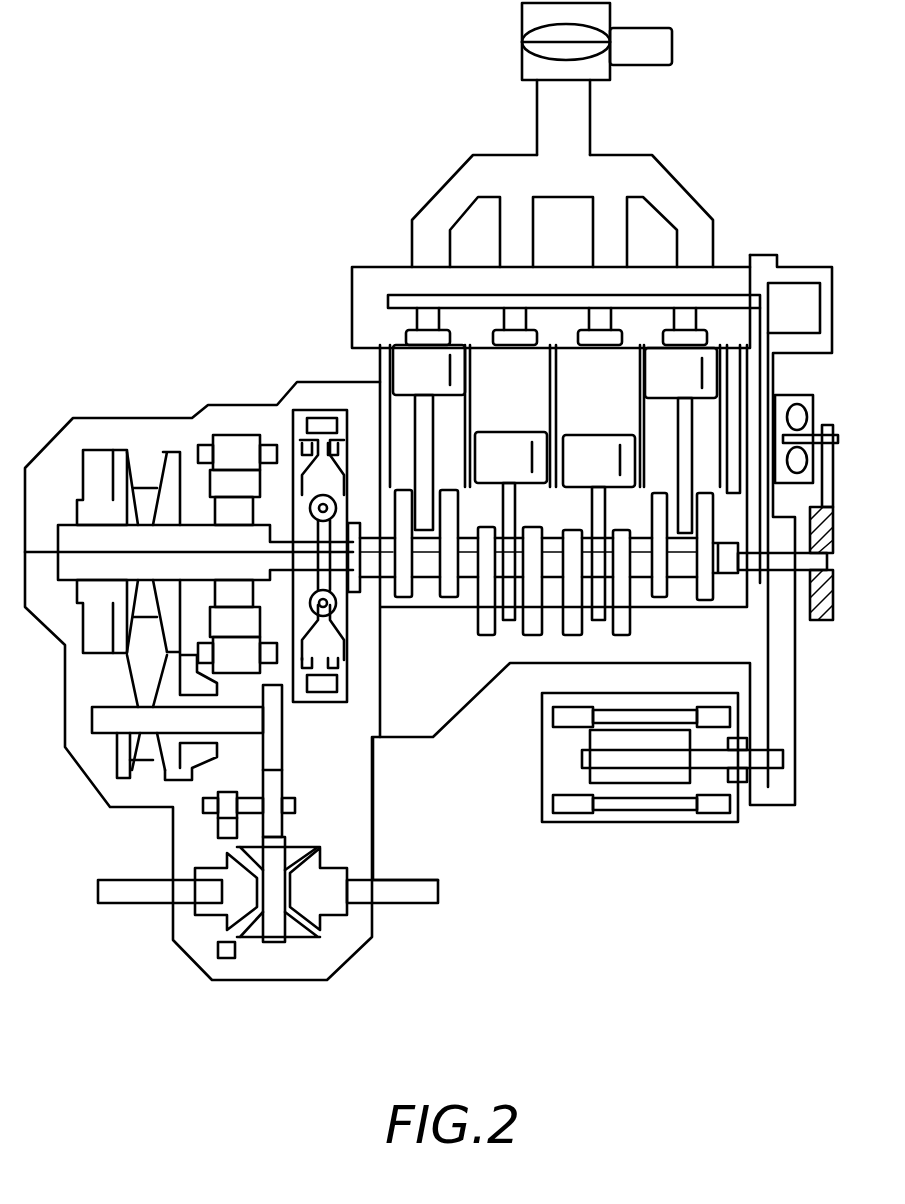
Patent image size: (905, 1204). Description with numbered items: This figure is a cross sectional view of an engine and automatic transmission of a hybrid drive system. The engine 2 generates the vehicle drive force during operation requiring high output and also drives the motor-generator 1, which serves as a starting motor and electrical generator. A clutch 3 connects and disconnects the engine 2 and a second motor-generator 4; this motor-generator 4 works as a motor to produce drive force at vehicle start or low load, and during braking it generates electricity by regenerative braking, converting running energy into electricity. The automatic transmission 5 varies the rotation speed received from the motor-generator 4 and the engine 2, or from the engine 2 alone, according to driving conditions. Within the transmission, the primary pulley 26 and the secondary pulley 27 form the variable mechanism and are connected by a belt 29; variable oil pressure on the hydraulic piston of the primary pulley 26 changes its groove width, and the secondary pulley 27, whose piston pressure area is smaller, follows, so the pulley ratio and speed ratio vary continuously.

The motor-generator 1 is at (655, 827).
The engine 2 is at (723, 267).
The clutch 3 is at (315, 412).
The motor-generator 4 is at (230, 437).
The automatic transmission 5 is at (78, 470).
The primary pulley 26 is at (133, 463).
The secondary pulley 27 is at (118, 747).
The belt 29 is at (147, 768).